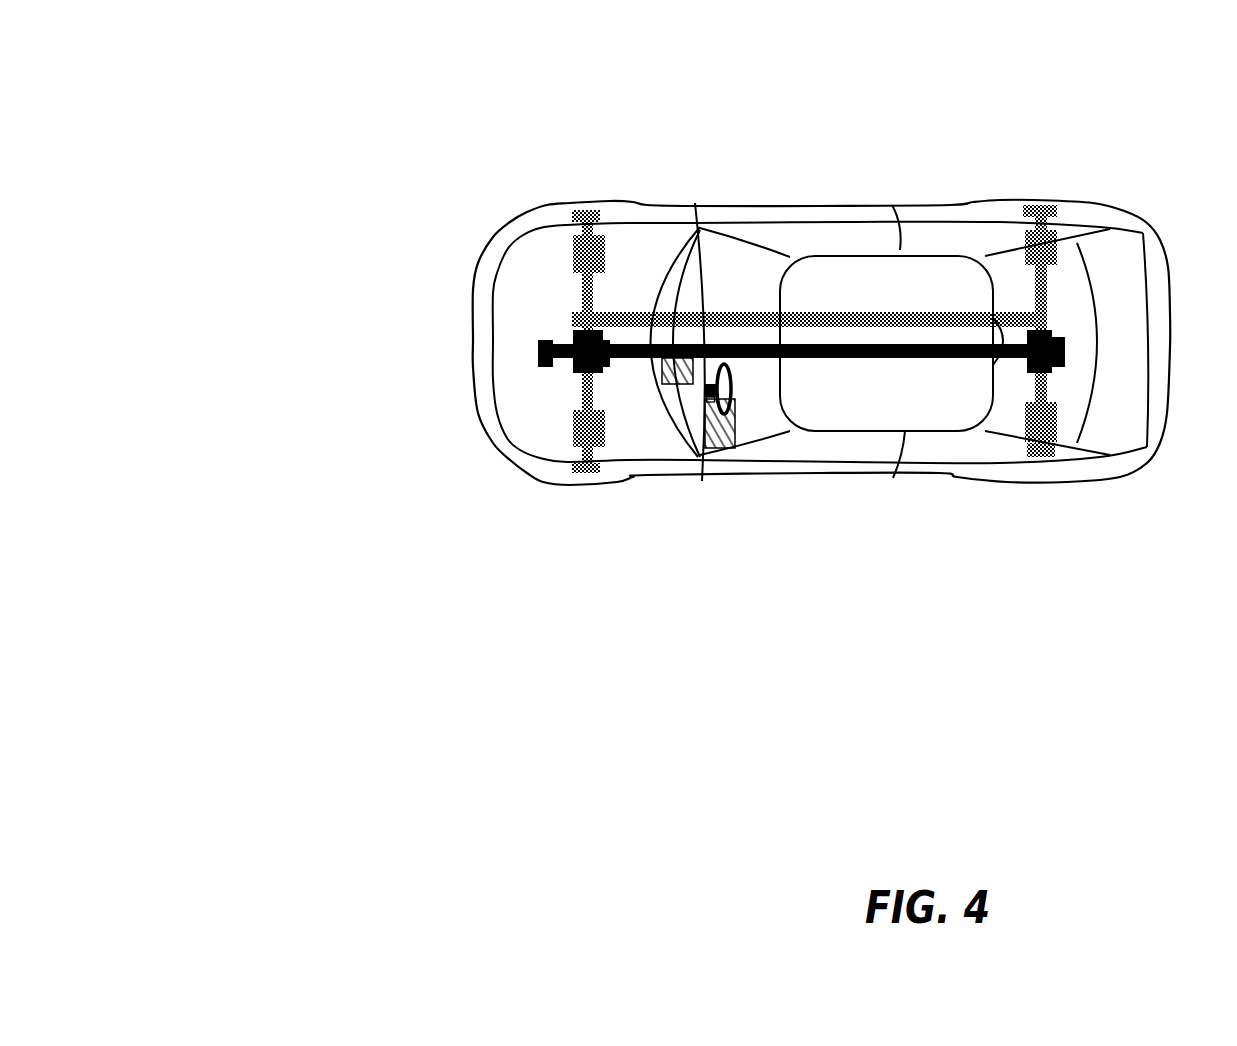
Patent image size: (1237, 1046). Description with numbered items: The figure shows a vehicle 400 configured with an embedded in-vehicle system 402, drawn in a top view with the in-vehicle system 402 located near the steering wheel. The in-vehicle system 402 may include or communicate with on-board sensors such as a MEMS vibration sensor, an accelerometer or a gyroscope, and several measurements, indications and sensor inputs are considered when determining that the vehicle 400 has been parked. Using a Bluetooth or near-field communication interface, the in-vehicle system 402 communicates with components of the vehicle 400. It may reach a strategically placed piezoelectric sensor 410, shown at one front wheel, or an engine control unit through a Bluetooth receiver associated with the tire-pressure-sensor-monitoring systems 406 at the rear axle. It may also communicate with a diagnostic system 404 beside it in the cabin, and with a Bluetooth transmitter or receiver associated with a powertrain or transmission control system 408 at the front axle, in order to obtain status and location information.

The vehicle 400 is at (281, 31).
The in-vehicle system 402 is at (720, 428).
The diagnostic system 404 is at (672, 372).
The Tire-Pressure-Sensor-Monitoring systems 406 is at (1037, 420).
The powertrain or transmission control system 408 is at (573, 332).
The piezoelectric sensor 410 is at (572, 212).